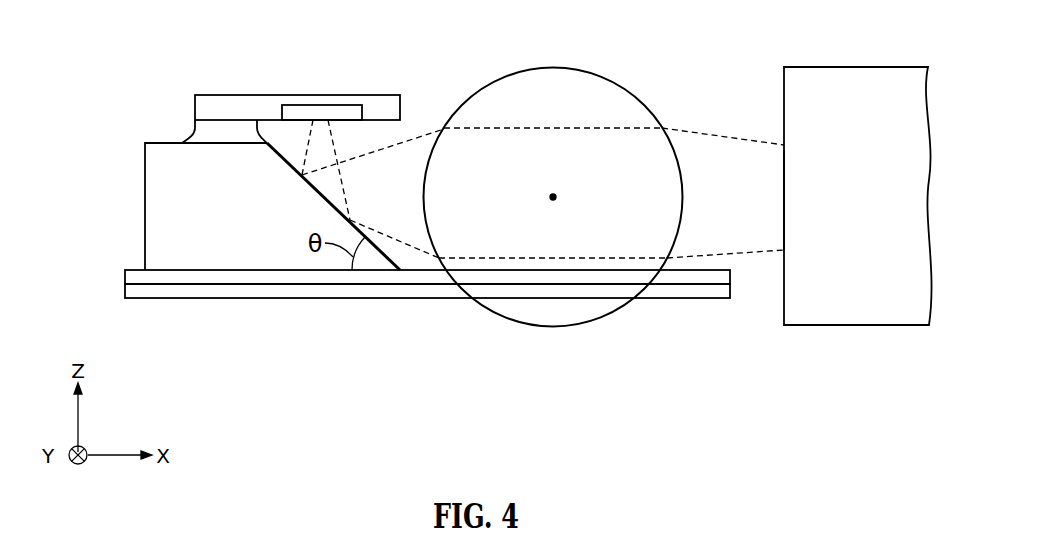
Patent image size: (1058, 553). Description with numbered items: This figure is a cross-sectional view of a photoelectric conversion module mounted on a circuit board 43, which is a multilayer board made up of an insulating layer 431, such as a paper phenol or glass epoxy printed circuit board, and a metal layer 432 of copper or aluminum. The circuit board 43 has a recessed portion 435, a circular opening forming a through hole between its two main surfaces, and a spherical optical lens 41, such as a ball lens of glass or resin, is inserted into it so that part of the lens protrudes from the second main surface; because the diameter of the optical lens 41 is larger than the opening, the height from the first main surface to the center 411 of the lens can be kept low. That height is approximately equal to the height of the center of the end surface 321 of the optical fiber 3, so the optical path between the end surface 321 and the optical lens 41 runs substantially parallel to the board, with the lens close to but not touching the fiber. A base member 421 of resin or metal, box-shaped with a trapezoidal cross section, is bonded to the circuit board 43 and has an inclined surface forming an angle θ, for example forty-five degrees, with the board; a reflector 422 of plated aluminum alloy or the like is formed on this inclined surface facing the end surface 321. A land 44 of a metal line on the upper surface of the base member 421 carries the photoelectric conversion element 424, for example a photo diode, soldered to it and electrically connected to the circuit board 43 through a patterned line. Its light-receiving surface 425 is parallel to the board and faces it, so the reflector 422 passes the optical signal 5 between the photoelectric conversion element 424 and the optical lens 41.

The optical fiber 3 is at (862, 67).
The optical signal 5 is at (732, 135).
The optical lens 41 is at (553, 68).
The center of the optical lens 411 is at (556, 197).
The end surface of the optical fiber 321 is at (784, 196).
The circuit board 43 is at (373, 288).
The insulating layer 431 is at (57, 266).
The metal layer 432 is at (128, 271).
The recessed portion 435 is at (462, 292).
The land 44 is at (193, 124).
The base member 421 is at (145, 205).
The reflector 422 is at (331, 201).
The photoelectric conversion element 424 is at (280, 95).
The light-receiving surface 425 is at (342, 105).